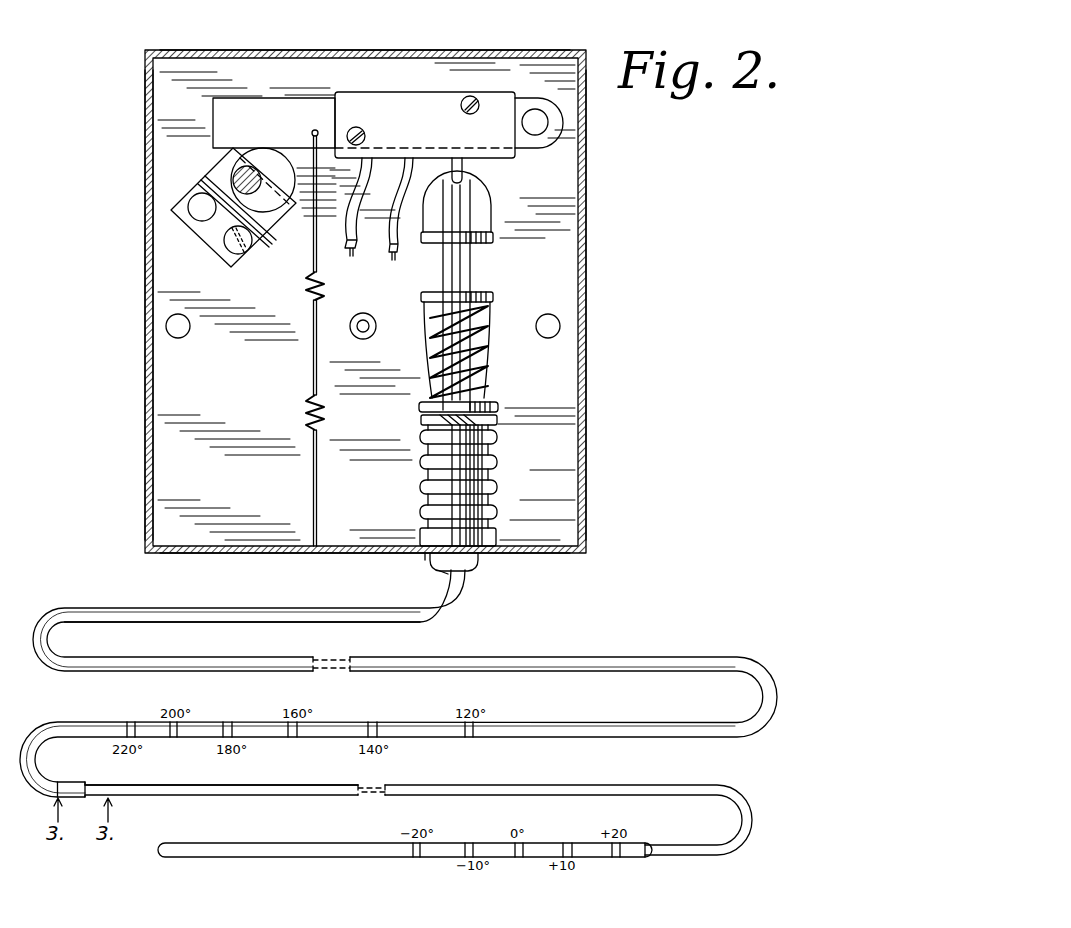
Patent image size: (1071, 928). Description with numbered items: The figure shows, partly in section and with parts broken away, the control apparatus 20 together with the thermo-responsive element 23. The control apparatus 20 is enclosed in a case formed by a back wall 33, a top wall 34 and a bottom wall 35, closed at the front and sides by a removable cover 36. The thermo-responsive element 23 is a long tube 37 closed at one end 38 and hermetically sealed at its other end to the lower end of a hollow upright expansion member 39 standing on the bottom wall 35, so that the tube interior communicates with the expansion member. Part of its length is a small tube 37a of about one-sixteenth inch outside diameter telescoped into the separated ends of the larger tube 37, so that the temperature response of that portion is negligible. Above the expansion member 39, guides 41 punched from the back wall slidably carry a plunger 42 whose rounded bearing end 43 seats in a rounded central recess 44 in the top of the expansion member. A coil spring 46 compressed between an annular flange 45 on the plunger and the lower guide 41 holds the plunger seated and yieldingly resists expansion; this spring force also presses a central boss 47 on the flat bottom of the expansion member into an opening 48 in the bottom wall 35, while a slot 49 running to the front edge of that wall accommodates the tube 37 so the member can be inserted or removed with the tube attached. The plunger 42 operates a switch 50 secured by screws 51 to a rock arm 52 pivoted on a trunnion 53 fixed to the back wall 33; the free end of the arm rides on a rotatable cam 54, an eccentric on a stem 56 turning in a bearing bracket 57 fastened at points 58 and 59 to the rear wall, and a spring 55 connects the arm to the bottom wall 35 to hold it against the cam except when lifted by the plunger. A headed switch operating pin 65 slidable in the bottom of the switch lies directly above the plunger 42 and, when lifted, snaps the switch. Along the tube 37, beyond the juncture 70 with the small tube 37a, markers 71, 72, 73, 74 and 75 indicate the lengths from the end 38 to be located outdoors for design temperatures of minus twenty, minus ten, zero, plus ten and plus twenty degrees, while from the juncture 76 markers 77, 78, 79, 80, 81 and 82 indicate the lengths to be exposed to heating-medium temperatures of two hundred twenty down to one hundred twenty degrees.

The control apparatus 20 is at (599, 340).
The thermo-responsive element 23 is at (609, 648).
The back wall 33 is at (145, 425).
The top wall 34 is at (526, 50).
The bottom wall 35 is at (274, 553).
The cover 36 is at (145, 182).
The tube 37 is at (442, 657).
The small tube 37a is at (405, 796).
The closed end 38 is at (158, 853).
The expansion member 39 is at (498, 486).
The guides 41 is at (493, 238).
The plunger 42 is at (471, 272).
The rounded bearing end 43 is at (497, 404).
The central recess 44 is at (430, 428).
The annular flange 45 is at (421, 409).
The coil spring 46 is at (430, 383).
The central boss 47 is at (478, 565).
The opening 48 is at (425, 560).
The slot 49 is at (448, 574).
The switch 50 is at (425, 97).
The screws 51 is at (357, 136).
The rock arm 52 is at (290, 98).
The pivot 53 is at (540, 112).
The cam 54 is at (273, 230).
The spring 55 is at (312, 383).
The stem 56 is at (236, 180).
The bearing bracket 57 is at (220, 258).
The fastening 58 is at (200, 203).
The fastening 59 is at (244, 254).
The switch operating pin 65 is at (494, 194).
The juncture 70 is at (648, 857).
The marker 71 is at (417, 858).
The marker 72 is at (470, 842).
The marker 73 is at (520, 858).
The marker 74 is at (568, 842).
The marker 75 is at (618, 858).
The juncture 76 is at (88, 782).
The marker 77 is at (140, 712).
The marker 78 is at (172, 738).
The marker 79 is at (238, 712).
The marker 80 is at (292, 738).
The marker 81 is at (374, 722).
The marker 82 is at (469, 738).